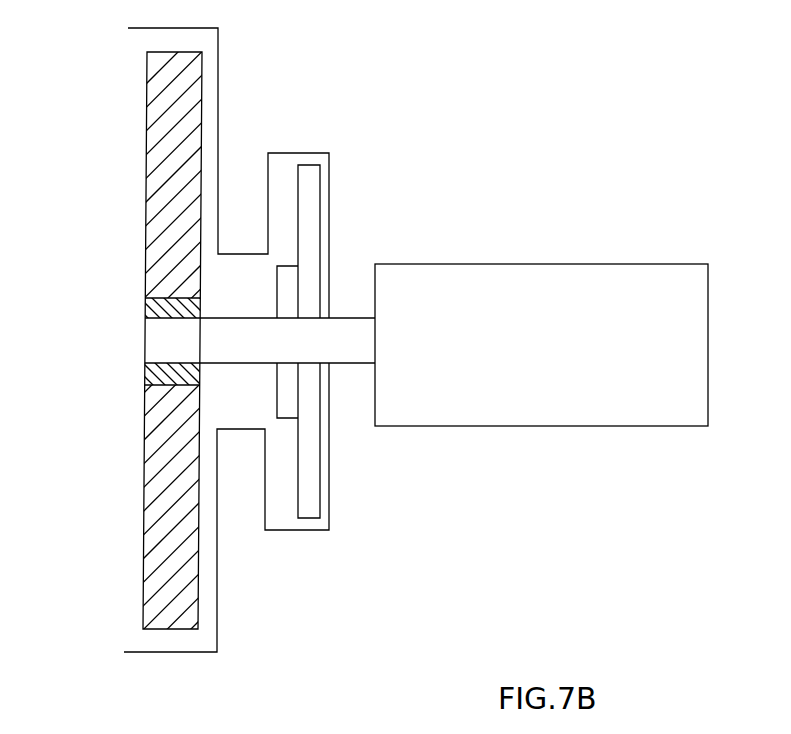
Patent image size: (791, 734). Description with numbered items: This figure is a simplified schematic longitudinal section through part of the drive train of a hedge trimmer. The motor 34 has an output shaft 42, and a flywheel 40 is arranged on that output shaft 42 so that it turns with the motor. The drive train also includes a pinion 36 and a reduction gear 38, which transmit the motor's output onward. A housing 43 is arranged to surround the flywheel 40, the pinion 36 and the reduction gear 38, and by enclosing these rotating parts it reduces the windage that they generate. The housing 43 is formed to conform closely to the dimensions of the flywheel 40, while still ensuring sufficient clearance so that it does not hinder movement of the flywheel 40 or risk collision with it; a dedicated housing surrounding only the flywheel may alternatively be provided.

The motor 34 is at (580, 357).
The pinion 36 is at (160, 382).
The reduction gear 38 is at (172, 137).
The flywheel 40 is at (308, 187).
The output shaft 42 is at (345, 333).
The housing 43 is at (280, 531).